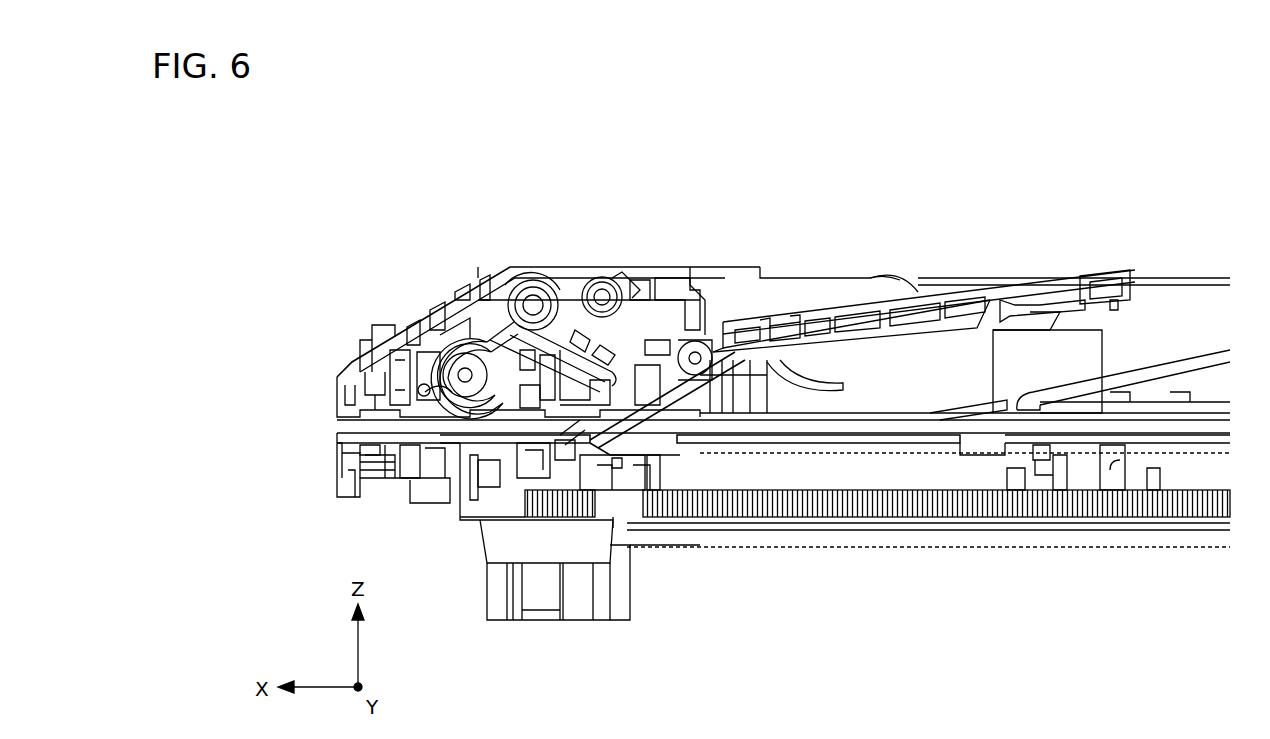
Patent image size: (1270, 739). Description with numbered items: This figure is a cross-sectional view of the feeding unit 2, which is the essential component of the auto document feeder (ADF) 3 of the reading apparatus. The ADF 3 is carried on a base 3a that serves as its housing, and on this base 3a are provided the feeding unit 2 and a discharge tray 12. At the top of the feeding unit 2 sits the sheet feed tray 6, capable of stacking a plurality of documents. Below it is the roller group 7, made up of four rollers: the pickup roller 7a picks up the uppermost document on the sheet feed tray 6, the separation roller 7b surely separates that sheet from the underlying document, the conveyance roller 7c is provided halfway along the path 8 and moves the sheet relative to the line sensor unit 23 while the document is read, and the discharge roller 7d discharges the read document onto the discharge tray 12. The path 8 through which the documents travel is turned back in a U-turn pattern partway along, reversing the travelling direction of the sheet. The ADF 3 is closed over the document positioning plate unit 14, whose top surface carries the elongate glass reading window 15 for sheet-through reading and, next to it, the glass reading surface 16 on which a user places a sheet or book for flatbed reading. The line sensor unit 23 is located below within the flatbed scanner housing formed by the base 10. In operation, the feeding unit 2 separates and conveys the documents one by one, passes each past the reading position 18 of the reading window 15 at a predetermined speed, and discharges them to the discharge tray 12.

The feeding unit 2 is at (1137, 168).
The auto document feeder (ADF) 3 is at (312, 262).
The base 3a is at (1193, 407).
The sheet feed tray 6 is at (893, 300).
The roller group 7 is at (695, 212).
The pickup roller 7a is at (602, 277).
The separation roller 7b is at (533, 280).
The conveyance roller 7c is at (468, 367).
The discharge roller 7d is at (695, 340).
The path 8 is at (445, 345).
The base 10 is at (337, 453).
The discharge tray 12 is at (1112, 395).
The document positioning plate unit 14 is at (312, 428).
The reading window 15 is at (558, 438).
The reading surface 16 is at (972, 440).
The reading position 18 is at (533, 438).
The line sensor unit 23 is at (525, 467).